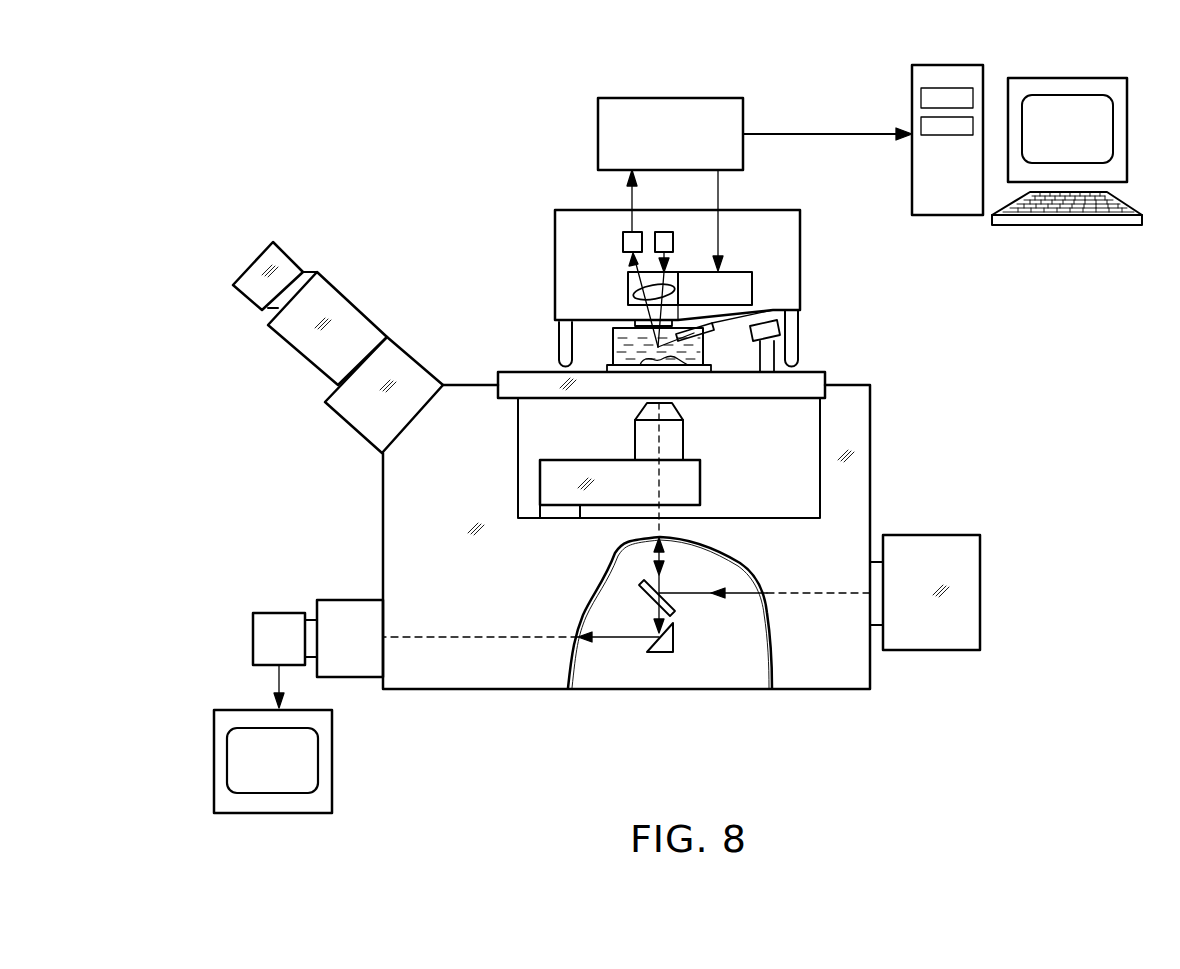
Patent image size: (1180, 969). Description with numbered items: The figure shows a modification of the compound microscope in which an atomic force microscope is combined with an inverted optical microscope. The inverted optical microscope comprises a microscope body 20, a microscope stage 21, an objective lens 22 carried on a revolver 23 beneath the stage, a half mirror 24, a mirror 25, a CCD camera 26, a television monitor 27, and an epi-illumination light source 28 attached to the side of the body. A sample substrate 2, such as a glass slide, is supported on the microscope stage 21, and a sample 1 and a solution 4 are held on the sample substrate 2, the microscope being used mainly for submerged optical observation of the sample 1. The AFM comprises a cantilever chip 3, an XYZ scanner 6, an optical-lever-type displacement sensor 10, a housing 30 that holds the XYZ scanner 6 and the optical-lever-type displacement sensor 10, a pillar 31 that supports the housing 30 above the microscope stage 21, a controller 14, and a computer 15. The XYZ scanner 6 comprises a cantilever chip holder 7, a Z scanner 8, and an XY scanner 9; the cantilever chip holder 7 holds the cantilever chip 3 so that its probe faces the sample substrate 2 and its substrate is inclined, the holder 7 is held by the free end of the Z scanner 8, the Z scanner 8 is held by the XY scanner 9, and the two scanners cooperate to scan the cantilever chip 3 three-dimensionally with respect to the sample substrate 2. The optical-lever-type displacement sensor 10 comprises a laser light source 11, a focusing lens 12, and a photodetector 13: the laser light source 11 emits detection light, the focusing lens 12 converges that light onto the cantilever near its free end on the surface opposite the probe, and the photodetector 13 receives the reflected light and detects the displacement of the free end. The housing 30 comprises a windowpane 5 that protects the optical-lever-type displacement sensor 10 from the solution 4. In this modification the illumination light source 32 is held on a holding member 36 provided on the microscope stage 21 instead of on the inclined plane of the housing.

The sample 1 is at (648, 356).
The sample substrate 2 is at (708, 371).
The cantilever chip 3 is at (714, 333).
The solution 4 is at (618, 344).
The windowpane 5 is at (645, 330).
The XYZ scanner 6 is at (778, 230).
The cantilever chip holder 7 is at (704, 318).
The Z scanner 8 is at (700, 307).
The XY scanner 9 is at (704, 288).
The optical-lever-type displacement sensor 10 is at (588, 232).
The laser light source 11 is at (655, 240).
The focusing lens 12 is at (628, 298).
The photodetector 13 is at (623, 252).
The controller 14 is at (683, 98).
The computer 15 is at (950, 215).
The microscope body 20 is at (383, 527).
The microscope stage 21 is at (825, 372).
The objective lens 22 is at (635, 438).
The revolver 23 is at (700, 480).
The half mirror 24 is at (674, 600).
The mirror 25 is at (676, 645).
The CCD camera 26 is at (360, 678).
The television monitor 27 is at (333, 775).
The epi-illumination light source 28 is at (981, 593).
The housing 30 is at (800, 294).
The pillar 31 is at (798, 342).
The illumination light source 32 is at (779, 326).
The holding member 36 is at (775, 351).